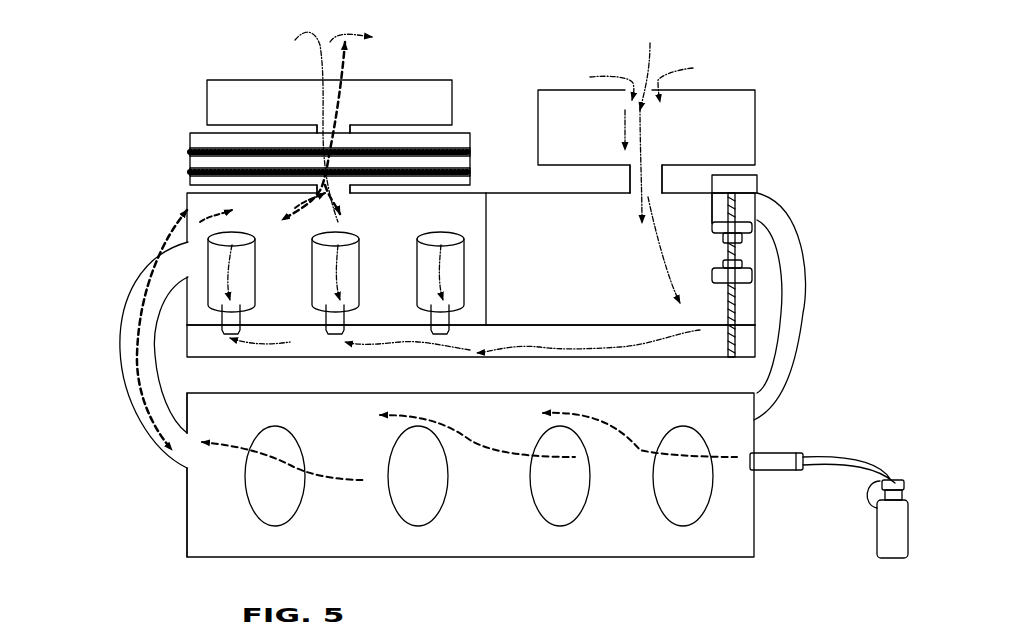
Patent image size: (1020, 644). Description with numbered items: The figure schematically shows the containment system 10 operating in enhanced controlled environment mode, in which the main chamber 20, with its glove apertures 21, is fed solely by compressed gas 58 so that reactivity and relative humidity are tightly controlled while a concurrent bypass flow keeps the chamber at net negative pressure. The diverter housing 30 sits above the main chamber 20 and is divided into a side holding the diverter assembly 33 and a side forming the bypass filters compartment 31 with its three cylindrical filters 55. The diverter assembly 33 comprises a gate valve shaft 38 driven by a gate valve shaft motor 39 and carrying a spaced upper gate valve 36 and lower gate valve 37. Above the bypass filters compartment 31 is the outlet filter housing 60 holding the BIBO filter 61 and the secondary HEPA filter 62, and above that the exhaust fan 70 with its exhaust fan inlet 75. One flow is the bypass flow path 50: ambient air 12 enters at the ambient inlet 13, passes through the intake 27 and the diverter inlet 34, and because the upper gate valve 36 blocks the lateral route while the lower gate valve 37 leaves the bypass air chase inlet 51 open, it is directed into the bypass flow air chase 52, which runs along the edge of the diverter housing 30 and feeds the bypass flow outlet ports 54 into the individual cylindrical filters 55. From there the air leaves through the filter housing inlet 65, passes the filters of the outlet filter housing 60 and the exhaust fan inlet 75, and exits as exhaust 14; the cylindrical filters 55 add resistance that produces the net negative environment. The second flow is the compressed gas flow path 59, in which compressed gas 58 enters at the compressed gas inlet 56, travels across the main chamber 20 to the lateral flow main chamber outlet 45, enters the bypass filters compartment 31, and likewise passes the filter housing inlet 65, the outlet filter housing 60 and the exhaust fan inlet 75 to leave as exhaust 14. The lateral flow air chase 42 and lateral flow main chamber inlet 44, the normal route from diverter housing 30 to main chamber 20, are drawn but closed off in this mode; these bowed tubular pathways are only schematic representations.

The containment system 10 is at (120, 95).
The ambient air 12 is at (647, 58).
The ambient inlet 13 is at (655, 90).
The exhaust 14 is at (295, 41).
The main chamber 20 is at (500, 428).
The glove aperture 21 is at (667, 488).
The intake 27 is at (661, 144).
The diverter housing 30 is at (510, 175).
The bypass filters compartment 31 is at (411, 233).
The diverter assembly 33 is at (622, 230).
The diverter inlet 34 is at (640, 182).
The upper gate valve 36 is at (712, 230).
The lower gate valve 37 is at (718, 278).
The gate valve shaft 38 is at (728, 345).
The gate valve shaft motor 39 is at (737, 188).
The lateral flow air chase 42 is at (722, 208).
The lateral flow main chamber inlet 44 is at (757, 405).
The lateral flow main chamber outlet 45 is at (185, 452).
The bypass flow path 50 is at (223, 292).
The bypass air chase inlet 51 is at (727, 323).
The bypass flow air chase 52 is at (531, 351).
The bypass flow outlet port 54 is at (428, 335).
The cylindrical filter 55 is at (437, 268).
The compressed gas inlet 56 is at (780, 473).
The compressed gas 58 is at (906, 539).
The compressed gas flow path 59 is at (163, 275).
The outlet filter housing 60 is at (187, 158).
The BIBO filter 61 is at (200, 173).
The secondary HEPA filter 62 is at (215, 150).
The filter housing inlet 65 is at (327, 188).
The exhaust fan 70 is at (401, 111).
The exhaust fan inlet 75 is at (328, 126).